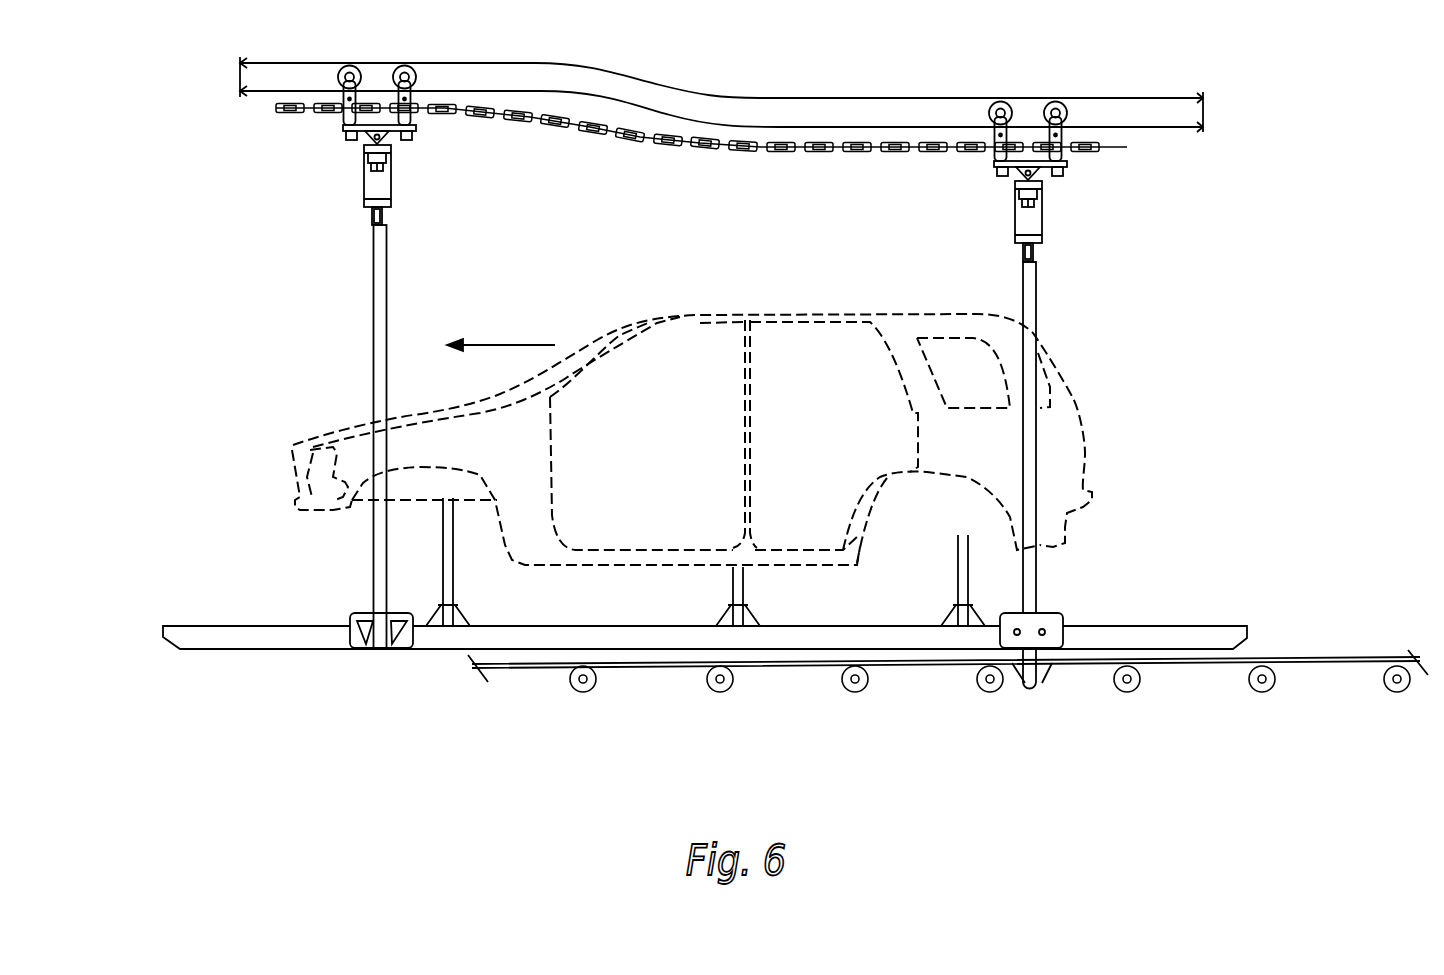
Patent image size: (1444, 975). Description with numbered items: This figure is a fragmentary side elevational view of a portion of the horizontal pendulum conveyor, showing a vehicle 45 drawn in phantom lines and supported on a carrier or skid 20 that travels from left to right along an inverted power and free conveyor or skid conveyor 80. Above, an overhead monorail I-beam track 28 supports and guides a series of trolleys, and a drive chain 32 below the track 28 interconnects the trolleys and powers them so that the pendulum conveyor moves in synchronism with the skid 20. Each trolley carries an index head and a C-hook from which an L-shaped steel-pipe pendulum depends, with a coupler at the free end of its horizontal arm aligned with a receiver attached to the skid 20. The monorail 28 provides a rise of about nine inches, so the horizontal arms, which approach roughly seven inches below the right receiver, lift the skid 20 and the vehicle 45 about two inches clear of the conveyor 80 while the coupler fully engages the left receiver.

The carrier or skid 20 is at (1183, 635).
The monorail I-beam track 28 is at (1123, 97).
The drive chain 32 is at (810, 154).
The vehicle 45 is at (852, 312).
The inverted power and free conveyor or skid conveyor 80 is at (775, 666).